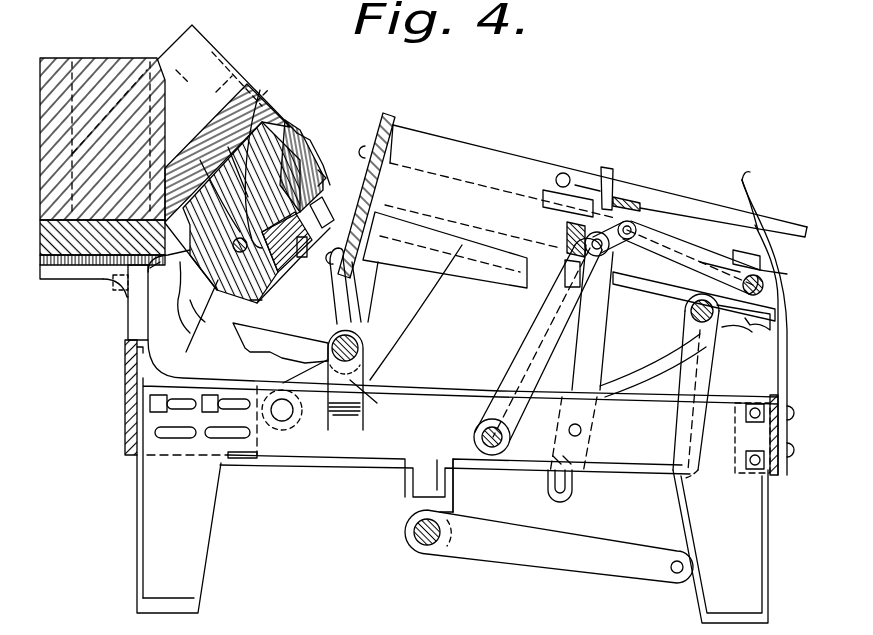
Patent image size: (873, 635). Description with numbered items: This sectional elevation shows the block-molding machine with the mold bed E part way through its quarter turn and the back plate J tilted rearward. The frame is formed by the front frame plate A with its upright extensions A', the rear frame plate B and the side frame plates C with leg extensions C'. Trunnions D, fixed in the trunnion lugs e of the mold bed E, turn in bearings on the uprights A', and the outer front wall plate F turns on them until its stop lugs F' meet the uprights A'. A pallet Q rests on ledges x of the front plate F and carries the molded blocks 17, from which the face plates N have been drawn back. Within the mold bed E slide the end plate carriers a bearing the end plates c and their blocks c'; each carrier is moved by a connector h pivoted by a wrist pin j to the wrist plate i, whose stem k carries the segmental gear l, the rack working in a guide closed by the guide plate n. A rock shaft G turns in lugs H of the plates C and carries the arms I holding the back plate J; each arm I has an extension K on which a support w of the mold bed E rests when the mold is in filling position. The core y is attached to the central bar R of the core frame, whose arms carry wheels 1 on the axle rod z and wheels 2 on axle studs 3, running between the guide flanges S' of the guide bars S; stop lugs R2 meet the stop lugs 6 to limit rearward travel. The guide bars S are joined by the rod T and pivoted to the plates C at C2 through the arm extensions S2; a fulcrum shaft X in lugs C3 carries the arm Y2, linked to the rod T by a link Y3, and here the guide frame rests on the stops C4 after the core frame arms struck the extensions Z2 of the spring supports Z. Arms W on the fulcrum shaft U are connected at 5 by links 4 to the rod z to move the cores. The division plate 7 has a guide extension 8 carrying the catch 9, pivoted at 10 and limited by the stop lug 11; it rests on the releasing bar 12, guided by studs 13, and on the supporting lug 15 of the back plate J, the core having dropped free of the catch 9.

The molded blocks 17 is at (93, 66).
The pallet Q is at (84, 258).
The outer front mold-wall plate F is at (101, 292).
The stop lug F' is at (111, 302).
The upright extension A' is at (119, 314).
The trunnion D is at (182, 272).
The ledges x is at (152, 270).
The guide bars S is at (183, 297).
The trunnion lug e is at (194, 303).
The front frame plate A is at (430, 469).
The leg extensions C' is at (452, 539).
The pivot of guide frame C2 is at (290, 417).
The side frame plates C is at (347, 402).
The lugs C3 is at (453, 495).
The guide flanges S' is at (780, 323).
The spring supports Z is at (778, 370).
The rear frame plate B is at (746, 434).
The round rod T is at (743, 333).
The division plate 7 is at (585, 206).
The core y is at (455, 188).
The back wall plate J is at (388, 133).
The guide extension 8 is at (665, 199).
The wheels 2 is at (601, 212).
The pivot of catch 10 is at (563, 173).
The catch 9 is at (579, 196).
The stop lug 11 is at (608, 190).
The releasing bar 12 is at (632, 194).
The central bar member R is at (568, 238).
The axle studs 3 is at (617, 274).
The pivot of links 5 is at (625, 236).
The links 4 is at (673, 248).
The axle rod z is at (766, 285).
The stop lugs R2 is at (720, 251).
The stop lugs 6 is at (747, 258).
The wheels 1 is at (760, 272).
The extension Z2 is at (749, 182).
The arms W is at (538, 339).
The fulcrum shaft U is at (482, 437).
The stops C4 is at (655, 374).
The links Y3 is at (676, 418).
The guide studs 13 is at (583, 430).
The arm Y2 is at (549, 546).
The fulcrum shaft X is at (410, 532).
The rock shaft G is at (358, 343).
The lugs H is at (352, 400).
The arms I is at (340, 286).
The supporting lug 15 is at (378, 325).
The arm extensions S2 is at (413, 312).
The lateral arm extension K is at (247, 343).
The connector h is at (214, 246).
The mold end-plates c is at (227, 79).
The block c' is at (227, 131).
The wrist pins j is at (230, 151).
The face plates N is at (272, 120).
The end plate carriers a is at (300, 138).
The mold bed E is at (256, 222).
The wrist plate i is at (320, 172).
The supports w is at (328, 215).
The segmental gear l is at (308, 247).
The cylindrical stem k is at (288, 272).
The guide plate n is at (266, 300).